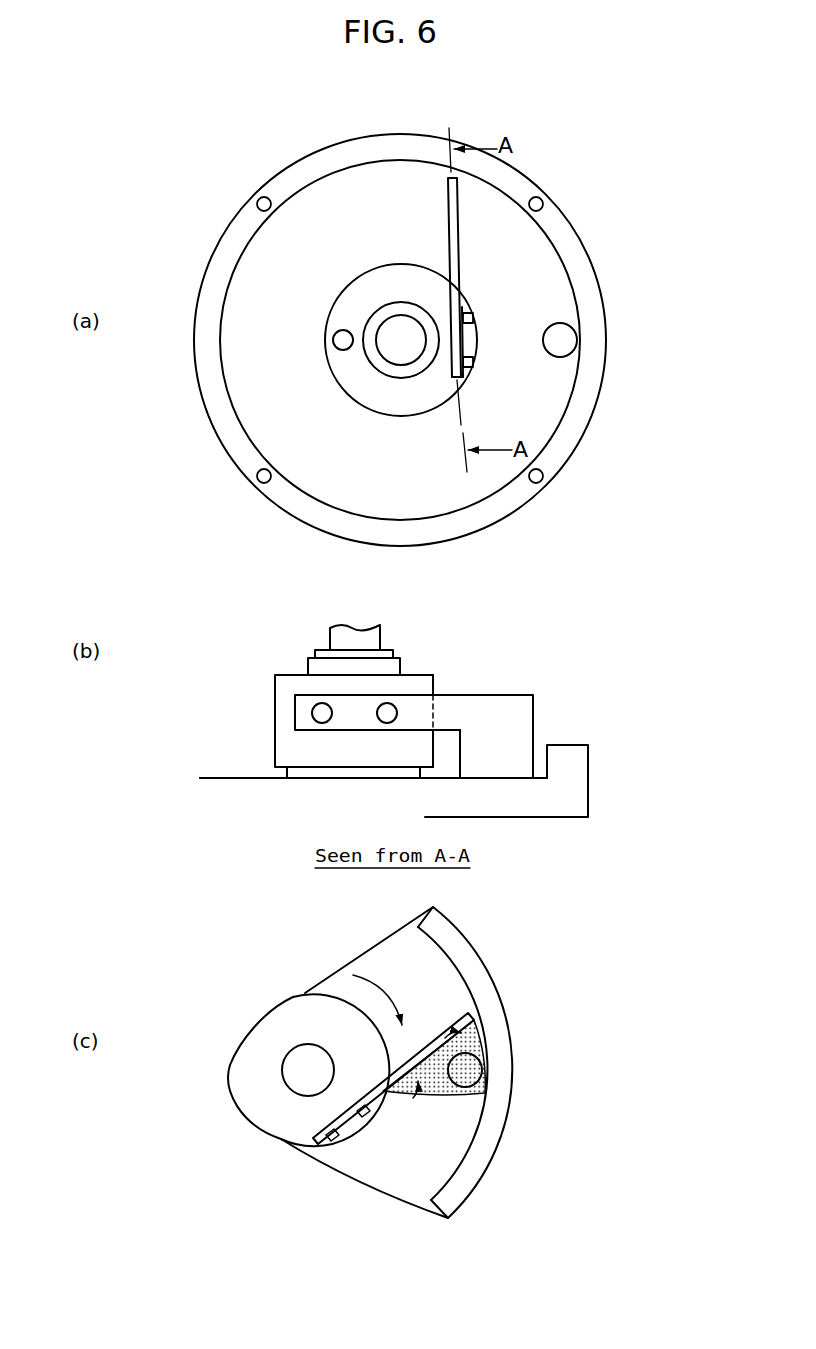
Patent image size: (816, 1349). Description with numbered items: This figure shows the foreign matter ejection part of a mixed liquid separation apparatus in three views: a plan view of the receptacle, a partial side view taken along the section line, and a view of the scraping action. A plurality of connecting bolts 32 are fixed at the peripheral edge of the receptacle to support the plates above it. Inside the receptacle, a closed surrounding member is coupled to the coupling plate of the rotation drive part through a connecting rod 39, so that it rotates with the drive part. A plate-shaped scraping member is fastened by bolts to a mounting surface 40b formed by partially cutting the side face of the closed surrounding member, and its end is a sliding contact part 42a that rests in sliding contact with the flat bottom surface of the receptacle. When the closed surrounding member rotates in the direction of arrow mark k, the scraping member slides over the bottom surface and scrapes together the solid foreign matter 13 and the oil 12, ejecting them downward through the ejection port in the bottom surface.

The connecting bolts 32 is at (258, 198).
The connecting rod 39 is at (334, 336).
The mounting surface 40b is at (464, 397).
The sliding contact part 42a is at (508, 762).
The oil 12 is at (472, 1046).
The solid foreign matter 13 is at (432, 1097).
The rotation direction k is at (366, 972).